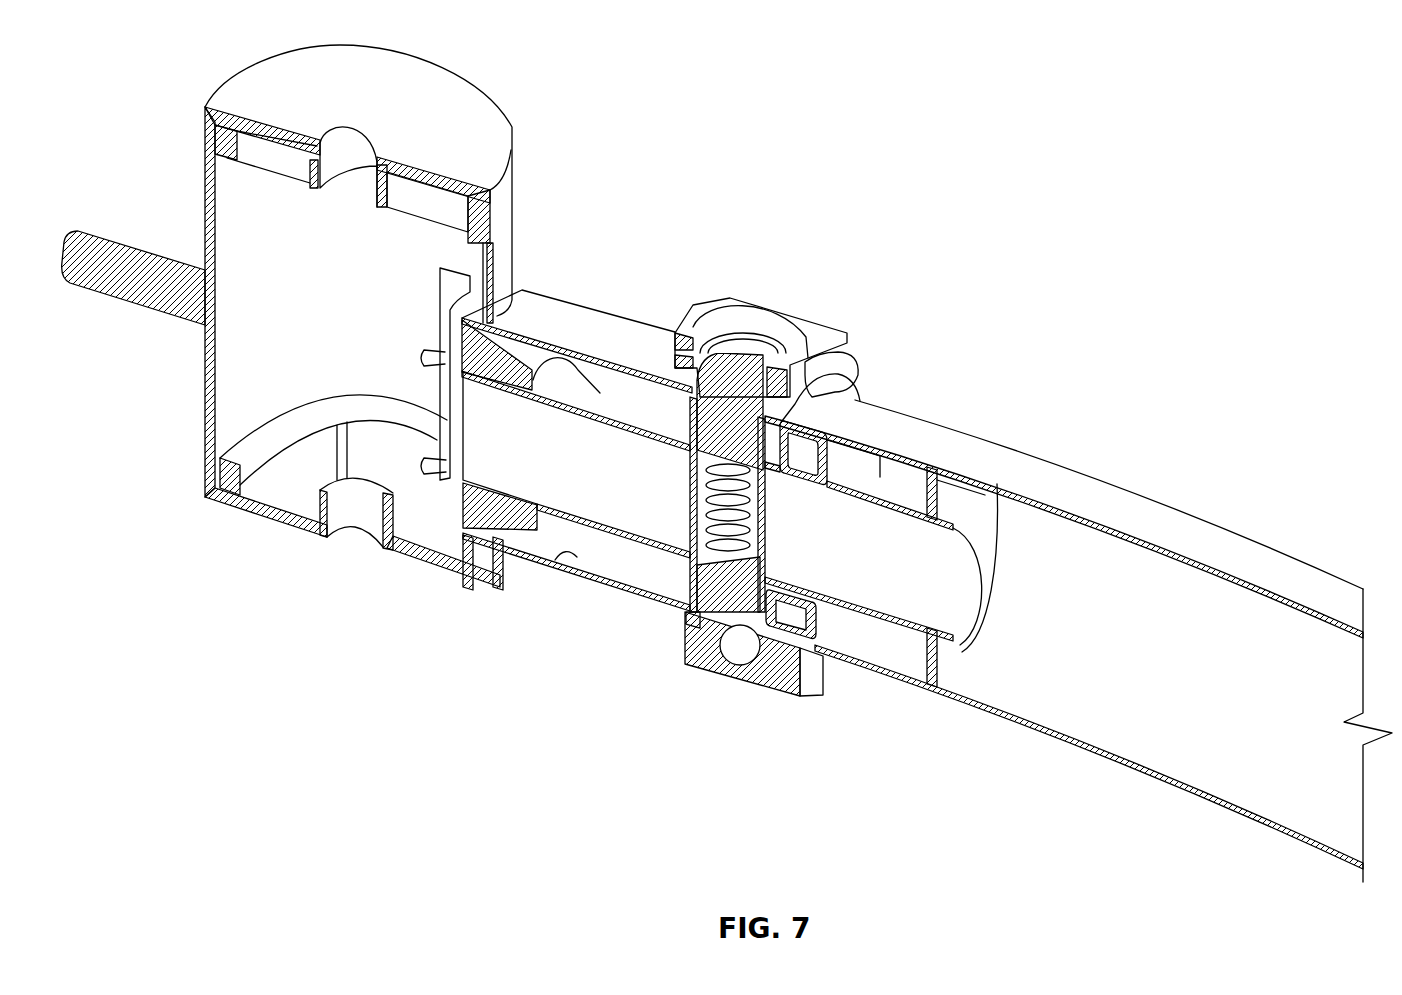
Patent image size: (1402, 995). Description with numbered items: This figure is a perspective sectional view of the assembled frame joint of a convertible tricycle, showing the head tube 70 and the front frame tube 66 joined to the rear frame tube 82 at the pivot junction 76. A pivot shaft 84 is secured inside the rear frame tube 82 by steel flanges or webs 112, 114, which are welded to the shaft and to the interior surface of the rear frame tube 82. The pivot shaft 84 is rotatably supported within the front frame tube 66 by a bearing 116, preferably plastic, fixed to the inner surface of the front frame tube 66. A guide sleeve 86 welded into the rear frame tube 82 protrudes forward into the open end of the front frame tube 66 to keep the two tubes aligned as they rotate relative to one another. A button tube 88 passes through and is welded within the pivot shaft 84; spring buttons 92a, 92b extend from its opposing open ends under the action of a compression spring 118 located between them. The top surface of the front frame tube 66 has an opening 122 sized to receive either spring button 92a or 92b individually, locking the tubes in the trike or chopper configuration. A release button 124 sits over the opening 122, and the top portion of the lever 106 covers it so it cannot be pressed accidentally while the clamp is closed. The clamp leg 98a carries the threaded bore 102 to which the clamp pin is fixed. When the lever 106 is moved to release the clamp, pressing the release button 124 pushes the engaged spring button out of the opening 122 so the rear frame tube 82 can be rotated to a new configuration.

The head tube 70 is at (205, 198).
The front frame tube 66 is at (565, 313).
The spring button 92a is at (696, 335).
The release button 124 is at (742, 350).
The pivot junction 76 is at (855, 296).
The lever 106 is at (848, 348).
The guide sleeve 86 is at (858, 402).
The rear frame tube 82 is at (1058, 460).
The opening 122 is at (668, 440).
The compression spring 118 is at (703, 533).
The bearing 116 is at (457, 520).
The pivot shaft 84 is at (595, 537).
The button tube 88 is at (687, 583).
The spring button 92b is at (687, 627).
The threaded bore 102 is at (713, 680).
The leg 98a is at (773, 697).
The flange 112 is at (830, 628).
The flange 114 is at (943, 650).